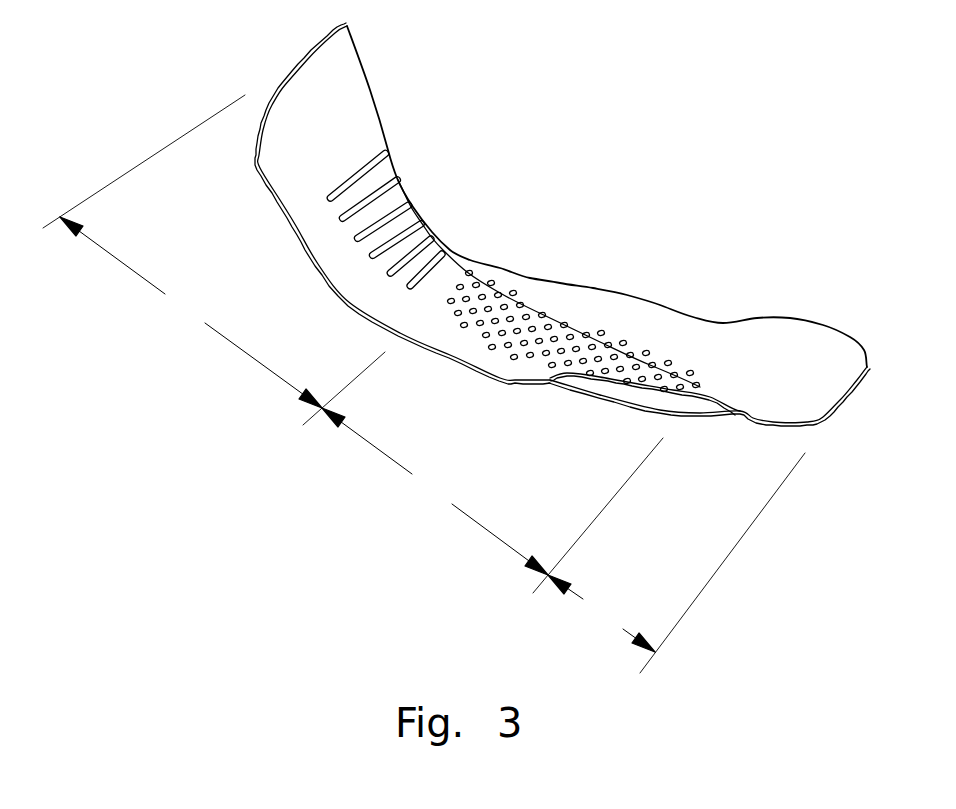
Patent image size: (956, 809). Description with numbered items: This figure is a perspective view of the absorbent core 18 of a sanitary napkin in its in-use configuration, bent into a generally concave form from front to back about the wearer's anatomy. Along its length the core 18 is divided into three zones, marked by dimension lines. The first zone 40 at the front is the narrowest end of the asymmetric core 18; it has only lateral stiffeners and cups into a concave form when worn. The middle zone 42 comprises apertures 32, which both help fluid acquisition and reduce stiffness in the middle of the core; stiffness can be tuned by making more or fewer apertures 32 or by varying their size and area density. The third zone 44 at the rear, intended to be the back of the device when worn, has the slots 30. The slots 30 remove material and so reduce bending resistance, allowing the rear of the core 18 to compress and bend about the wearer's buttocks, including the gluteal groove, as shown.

The absorbent core 18 is at (656, 174).
The slots 30 is at (433, 262).
The apertures 32 is at (607, 338).
The first zone 40 is at (676, 563).
The middle zone 42 is at (492, 500).
The third zone 44 is at (214, 260).